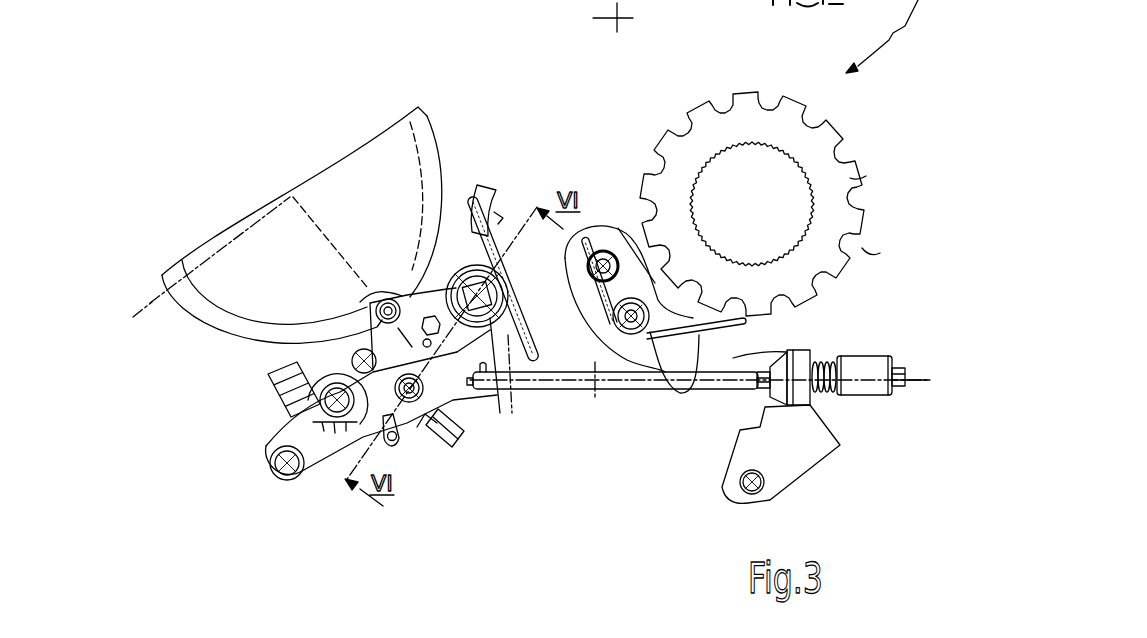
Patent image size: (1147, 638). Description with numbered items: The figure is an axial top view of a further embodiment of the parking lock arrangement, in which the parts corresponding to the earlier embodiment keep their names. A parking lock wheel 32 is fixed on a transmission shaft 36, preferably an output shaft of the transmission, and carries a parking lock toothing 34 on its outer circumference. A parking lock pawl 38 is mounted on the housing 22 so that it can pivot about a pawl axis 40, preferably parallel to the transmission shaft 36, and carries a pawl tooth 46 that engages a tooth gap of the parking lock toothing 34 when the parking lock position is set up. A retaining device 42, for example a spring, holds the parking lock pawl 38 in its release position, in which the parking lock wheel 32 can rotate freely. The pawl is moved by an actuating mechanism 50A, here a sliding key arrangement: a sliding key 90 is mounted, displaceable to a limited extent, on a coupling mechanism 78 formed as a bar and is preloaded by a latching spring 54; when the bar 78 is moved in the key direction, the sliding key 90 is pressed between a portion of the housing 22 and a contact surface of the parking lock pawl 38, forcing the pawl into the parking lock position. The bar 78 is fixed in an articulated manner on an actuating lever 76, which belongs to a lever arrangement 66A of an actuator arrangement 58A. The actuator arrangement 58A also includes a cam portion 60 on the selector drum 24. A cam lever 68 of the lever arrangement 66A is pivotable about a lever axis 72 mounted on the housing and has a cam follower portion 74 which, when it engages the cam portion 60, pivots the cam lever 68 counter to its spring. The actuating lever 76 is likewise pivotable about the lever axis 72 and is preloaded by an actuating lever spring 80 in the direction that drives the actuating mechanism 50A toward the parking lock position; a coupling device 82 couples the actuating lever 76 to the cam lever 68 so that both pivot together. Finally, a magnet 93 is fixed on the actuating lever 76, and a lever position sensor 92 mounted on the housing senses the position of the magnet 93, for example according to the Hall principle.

The housing 22 is at (790, 457).
The selector drum 24 is at (413, 127).
The parking lock wheel 32 is at (863, 173).
The parking lock toothing 34 is at (873, 258).
The transmission shaft 36 is at (763, 167).
The parking lock pawl 38 is at (722, 345).
The pawl axis 40 is at (655, 363).
The retaining device 42 is at (707, 377).
The pawl tooth 46 is at (707, 303).
The actuating mechanism 50A is at (887, 331).
The latching spring 54 is at (820, 362).
The actuator arrangement 58A is at (458, 108).
The cam portion 60 is at (365, 315).
The lever arrangement 66A is at (503, 165).
The cam lever 68 is at (398, 290).
The lever axis 72 is at (452, 380).
The cam follower portion 74 is at (377, 293).
The actuating lever 76 is at (456, 384).
The coupling mechanism 78 is at (633, 378).
The actuating lever spring 80 is at (527, 328).
The coupling device 82 is at (412, 445).
The sliding key 90 is at (800, 392).
The lever position sensor 92 is at (331, 472).
The magnet 93 is at (350, 355).